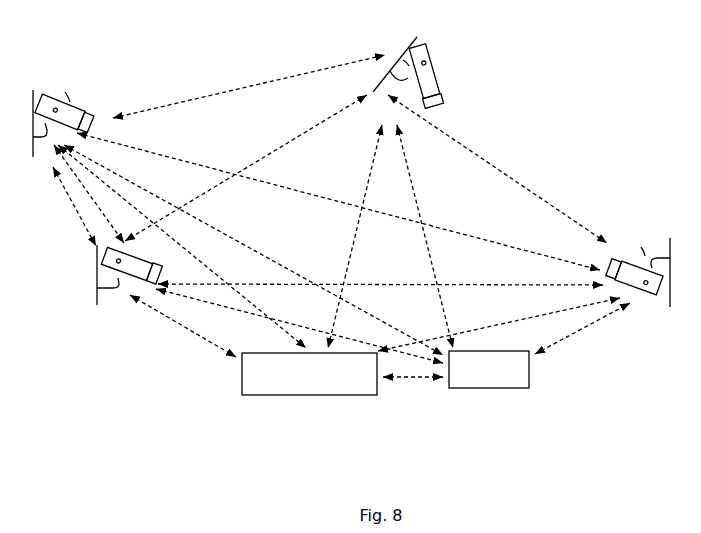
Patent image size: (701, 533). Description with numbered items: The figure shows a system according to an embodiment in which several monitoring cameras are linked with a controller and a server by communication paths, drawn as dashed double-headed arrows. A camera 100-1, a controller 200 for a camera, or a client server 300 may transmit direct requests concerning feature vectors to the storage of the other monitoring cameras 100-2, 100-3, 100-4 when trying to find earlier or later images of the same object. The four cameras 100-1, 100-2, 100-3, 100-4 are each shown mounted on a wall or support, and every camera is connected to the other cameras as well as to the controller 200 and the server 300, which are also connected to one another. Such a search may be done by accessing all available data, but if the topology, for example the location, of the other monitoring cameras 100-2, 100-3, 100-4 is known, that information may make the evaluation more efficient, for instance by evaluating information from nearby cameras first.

The camera 100-1 is at (63, 114).
The monitoring camera 100-2 is at (422, 60).
The monitoring camera 100-3 is at (638, 258).
The monitoring camera 100-4 is at (140, 243).
The controller 200 is at (290, 396).
The client server 300 is at (515, 389).